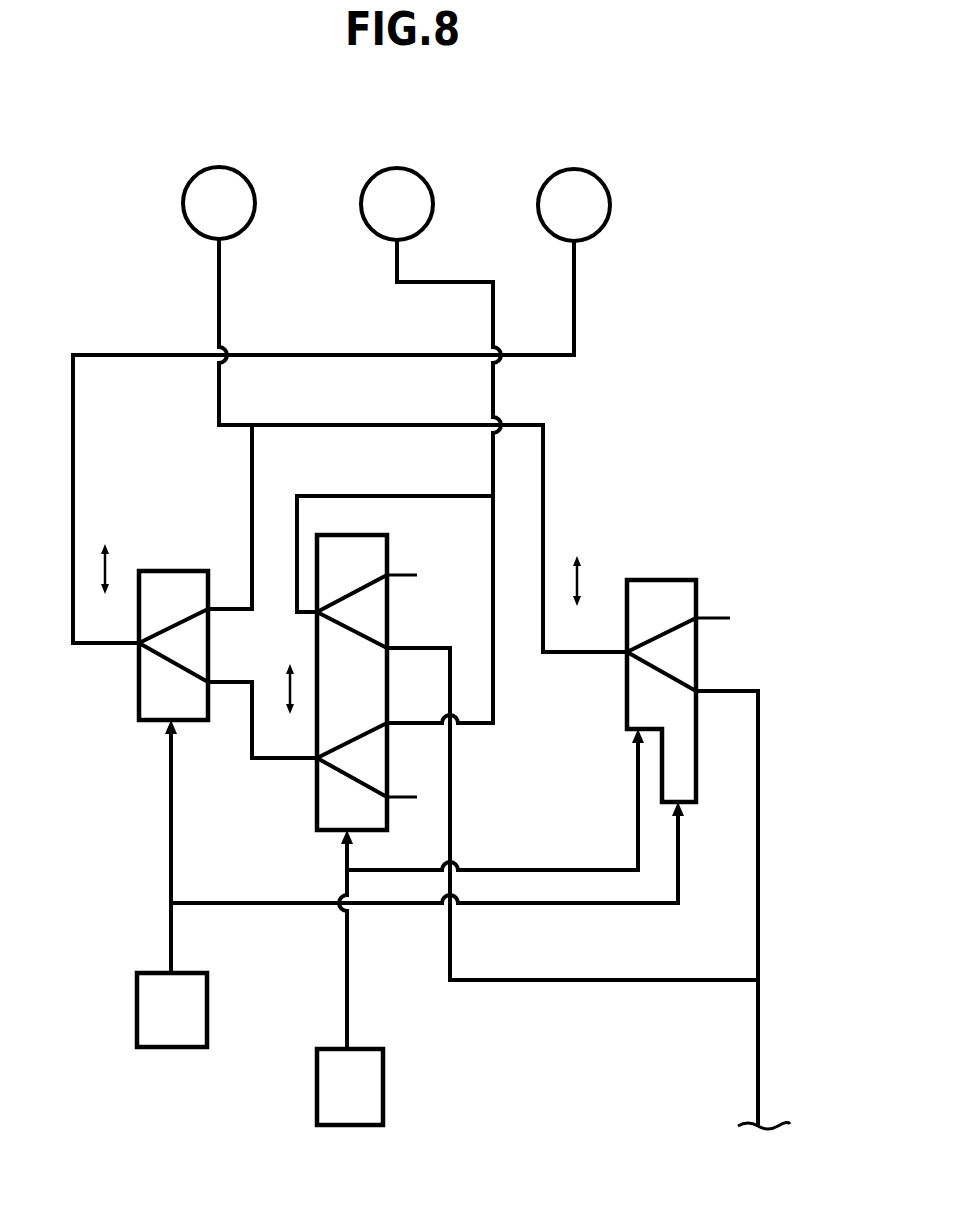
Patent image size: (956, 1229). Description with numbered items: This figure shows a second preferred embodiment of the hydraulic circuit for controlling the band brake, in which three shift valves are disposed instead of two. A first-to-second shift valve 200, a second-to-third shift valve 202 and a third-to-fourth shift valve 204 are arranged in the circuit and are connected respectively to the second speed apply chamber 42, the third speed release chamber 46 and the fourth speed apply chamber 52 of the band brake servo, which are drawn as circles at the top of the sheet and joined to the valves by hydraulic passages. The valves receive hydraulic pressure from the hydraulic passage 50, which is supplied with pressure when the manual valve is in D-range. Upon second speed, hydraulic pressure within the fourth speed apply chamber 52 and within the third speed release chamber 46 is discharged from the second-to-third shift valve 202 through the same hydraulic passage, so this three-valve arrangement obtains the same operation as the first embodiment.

The second speed apply chamber 42 is at (219, 167).
The third speed release chamber 46 is at (397, 168).
The fourth speed apply chamber 52 is at (575, 169).
The 3-4 shift valve 204 is at (177, 563).
The 2-3 shift valve 202 is at (391, 542).
The 1-2 shift valve 200 is at (659, 577).
The hydraulic passage 50 is at (759, 1082).